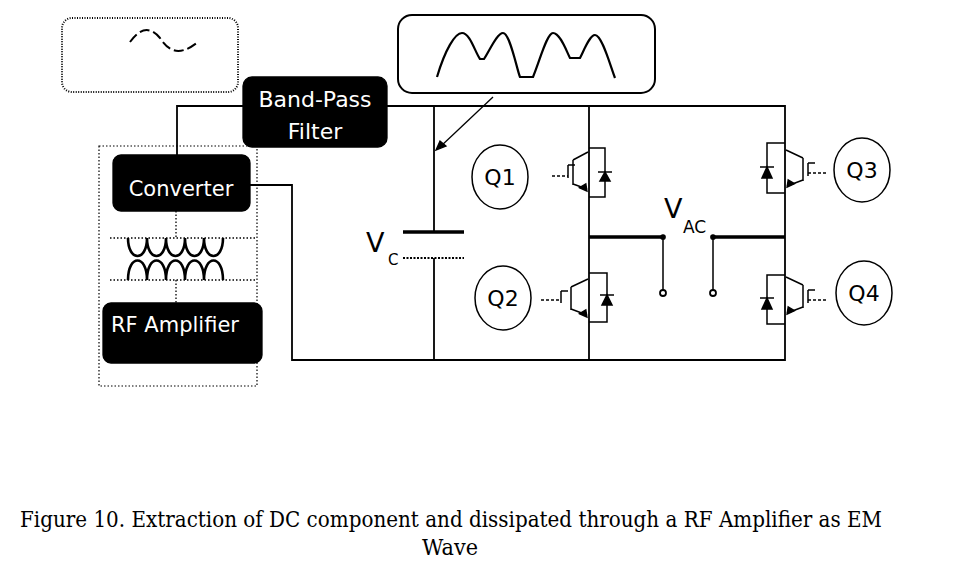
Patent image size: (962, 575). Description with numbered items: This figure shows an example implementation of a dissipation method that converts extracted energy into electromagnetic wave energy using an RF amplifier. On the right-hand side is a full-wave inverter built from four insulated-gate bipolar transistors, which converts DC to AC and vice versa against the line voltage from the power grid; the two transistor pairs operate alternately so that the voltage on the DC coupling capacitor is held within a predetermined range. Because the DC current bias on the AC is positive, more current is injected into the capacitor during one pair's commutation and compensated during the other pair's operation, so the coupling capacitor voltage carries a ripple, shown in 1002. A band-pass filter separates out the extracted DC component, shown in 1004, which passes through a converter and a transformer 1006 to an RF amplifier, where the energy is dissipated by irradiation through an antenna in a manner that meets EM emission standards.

The ripple of coupling capacitor voltage 1002 is at (655, 30).
The extracted DC component 1004 is at (60, 47).
The transformer 1006 is at (116, 257).